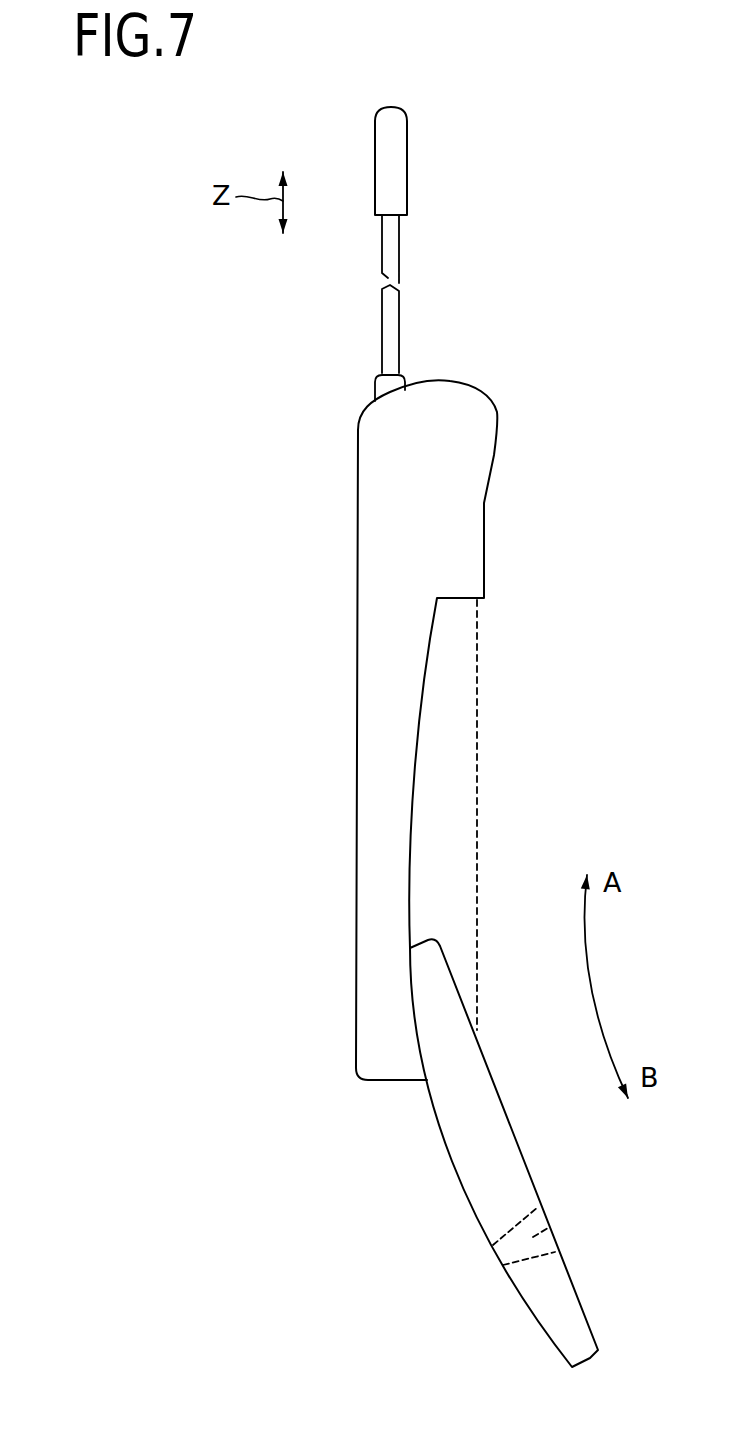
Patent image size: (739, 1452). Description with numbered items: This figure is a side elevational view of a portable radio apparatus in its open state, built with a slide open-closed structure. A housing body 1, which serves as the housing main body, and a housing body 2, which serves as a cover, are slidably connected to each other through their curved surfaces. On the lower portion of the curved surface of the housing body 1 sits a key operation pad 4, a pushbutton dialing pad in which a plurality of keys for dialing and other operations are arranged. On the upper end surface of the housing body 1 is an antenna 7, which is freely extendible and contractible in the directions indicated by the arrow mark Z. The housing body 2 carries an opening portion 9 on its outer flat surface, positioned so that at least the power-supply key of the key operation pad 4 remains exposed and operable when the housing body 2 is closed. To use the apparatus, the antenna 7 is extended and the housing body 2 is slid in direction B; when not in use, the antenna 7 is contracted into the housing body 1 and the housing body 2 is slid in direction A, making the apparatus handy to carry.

The antenna 7 is at (407, 165).
The housing body 1 is at (484, 519).
The key operation pad 4 is at (453, 792).
The housing body 2 is at (477, 1182).
The opening portion 9 is at (548, 1229).